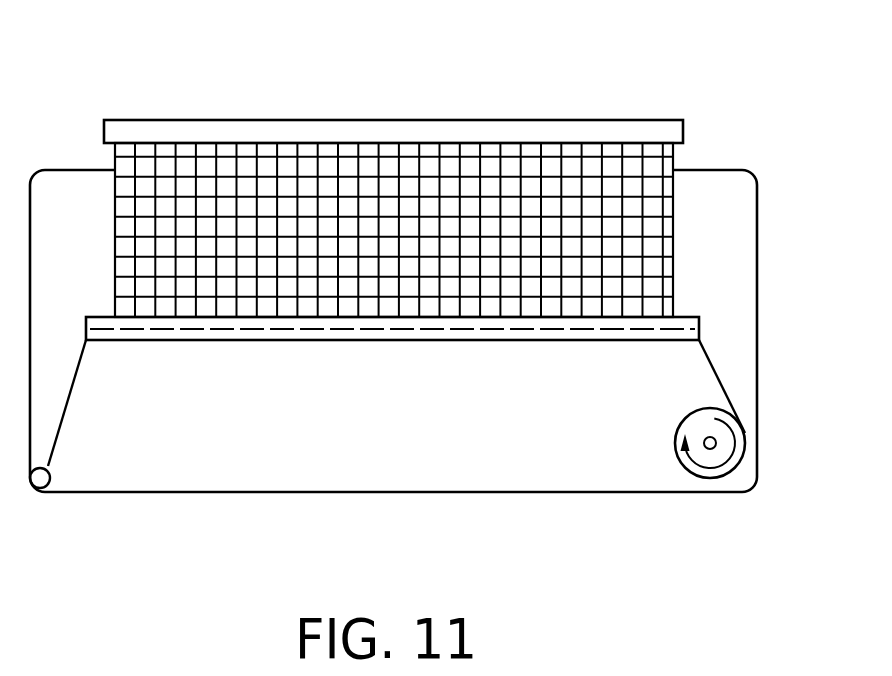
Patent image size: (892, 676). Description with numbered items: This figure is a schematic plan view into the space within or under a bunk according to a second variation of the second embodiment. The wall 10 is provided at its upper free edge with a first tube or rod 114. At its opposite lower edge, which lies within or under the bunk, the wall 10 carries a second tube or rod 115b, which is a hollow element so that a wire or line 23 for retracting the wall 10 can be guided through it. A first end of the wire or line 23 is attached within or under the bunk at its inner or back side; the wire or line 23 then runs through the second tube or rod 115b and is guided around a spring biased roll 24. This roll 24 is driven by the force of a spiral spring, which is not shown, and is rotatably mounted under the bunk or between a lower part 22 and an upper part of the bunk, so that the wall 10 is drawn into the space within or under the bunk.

The wall 10 is at (258, 188).
The first tube or rod 114 is at (487, 120).
The second tube or rod 115b is at (462, 341).
The lower part 22 is at (315, 434).
The wire or line 23 is at (68, 397).
The spring biased roll 24 is at (673, 443).